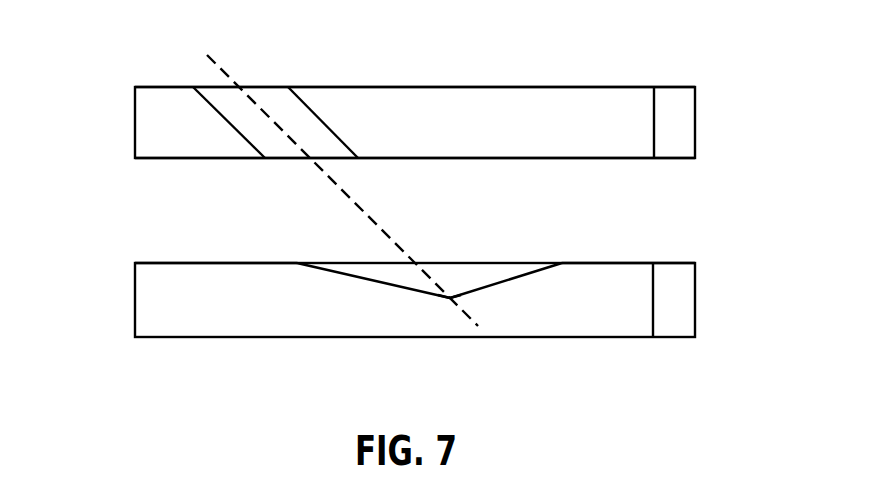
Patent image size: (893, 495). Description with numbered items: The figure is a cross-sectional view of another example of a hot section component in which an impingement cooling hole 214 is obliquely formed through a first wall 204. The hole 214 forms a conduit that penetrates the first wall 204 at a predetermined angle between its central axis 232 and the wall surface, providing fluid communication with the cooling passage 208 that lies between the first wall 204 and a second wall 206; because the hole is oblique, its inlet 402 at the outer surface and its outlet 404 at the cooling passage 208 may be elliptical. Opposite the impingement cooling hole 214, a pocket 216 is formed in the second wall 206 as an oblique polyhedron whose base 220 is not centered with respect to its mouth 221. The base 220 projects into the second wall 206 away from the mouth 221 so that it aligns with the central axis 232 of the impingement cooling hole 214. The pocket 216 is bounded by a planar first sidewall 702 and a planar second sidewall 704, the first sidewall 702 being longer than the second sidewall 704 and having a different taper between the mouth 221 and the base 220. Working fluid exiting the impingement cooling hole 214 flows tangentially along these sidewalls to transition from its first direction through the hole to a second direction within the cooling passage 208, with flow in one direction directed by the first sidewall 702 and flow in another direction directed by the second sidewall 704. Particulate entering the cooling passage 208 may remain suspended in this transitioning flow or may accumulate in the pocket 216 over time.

The first wall 204 is at (135, 128).
The second wall 206 is at (135, 300).
The cooling passage 208 is at (696, 200).
The impingement cooling hole 214 is at (317, 128).
The pocket 216 is at (523, 267).
The base 220 is at (450, 299).
The mouth 221 is at (452, 246).
The central axis 232 is at (343, 195).
The inlet 402 is at (280, 86).
The outlet 404 is at (415, 159).
The first sidewall 702 is at (330, 275).
The second sidewall 704 is at (472, 290).